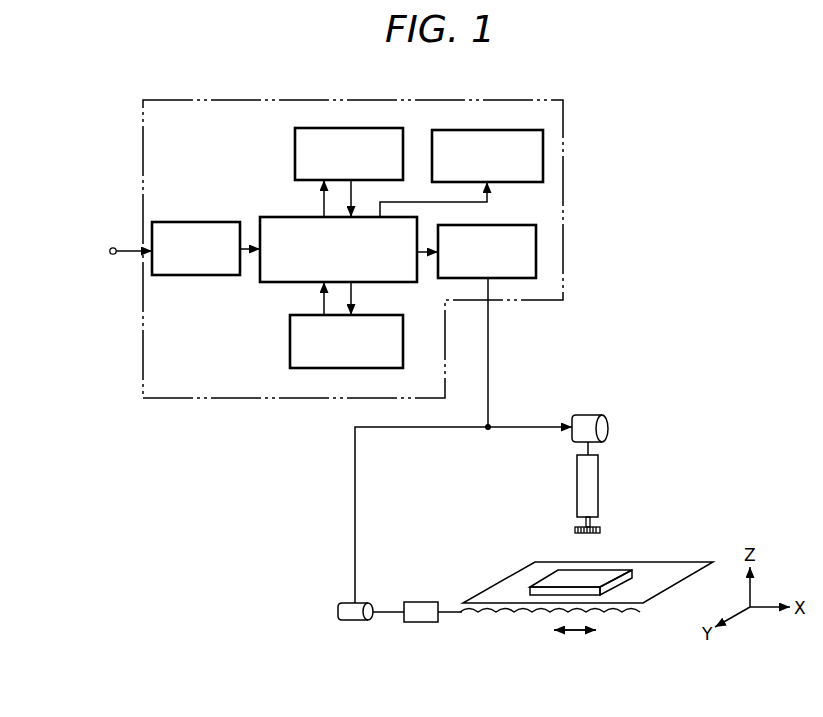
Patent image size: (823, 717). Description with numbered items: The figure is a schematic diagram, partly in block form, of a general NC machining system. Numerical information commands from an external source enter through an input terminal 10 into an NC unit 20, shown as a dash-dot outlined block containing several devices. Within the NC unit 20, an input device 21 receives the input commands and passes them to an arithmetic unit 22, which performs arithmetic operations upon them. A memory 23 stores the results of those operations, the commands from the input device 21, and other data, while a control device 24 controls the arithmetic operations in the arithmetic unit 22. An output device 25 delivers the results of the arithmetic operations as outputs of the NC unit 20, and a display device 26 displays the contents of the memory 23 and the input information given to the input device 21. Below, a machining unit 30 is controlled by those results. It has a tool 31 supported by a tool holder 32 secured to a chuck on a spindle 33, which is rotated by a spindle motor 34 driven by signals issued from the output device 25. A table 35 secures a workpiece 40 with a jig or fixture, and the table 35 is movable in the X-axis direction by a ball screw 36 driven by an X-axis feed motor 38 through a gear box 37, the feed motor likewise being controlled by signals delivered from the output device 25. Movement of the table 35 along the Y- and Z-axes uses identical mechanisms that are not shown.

The input terminal 10 is at (113, 254).
The NC unit 20 is at (566, 207).
The input device 21 is at (195, 276).
The arithmetic unit 22 is at (298, 283).
The memory 23 is at (295, 152).
The control device 24 is at (290, 357).
The output device 25 is at (437, 279).
The display device 26 is at (507, 130).
The machining unit 30 is at (692, 486).
The tool 31 is at (600, 530).
The tool holder 32 is at (591, 523).
The spindle 33 is at (592, 481).
The spindle motor 34 is at (595, 415).
The table 35 is at (683, 563).
The ball screw 36 is at (468, 614).
The gear box 37 is at (423, 623).
The X-axis feed motor 38 is at (358, 621).
The workpiece 40 is at (560, 578).